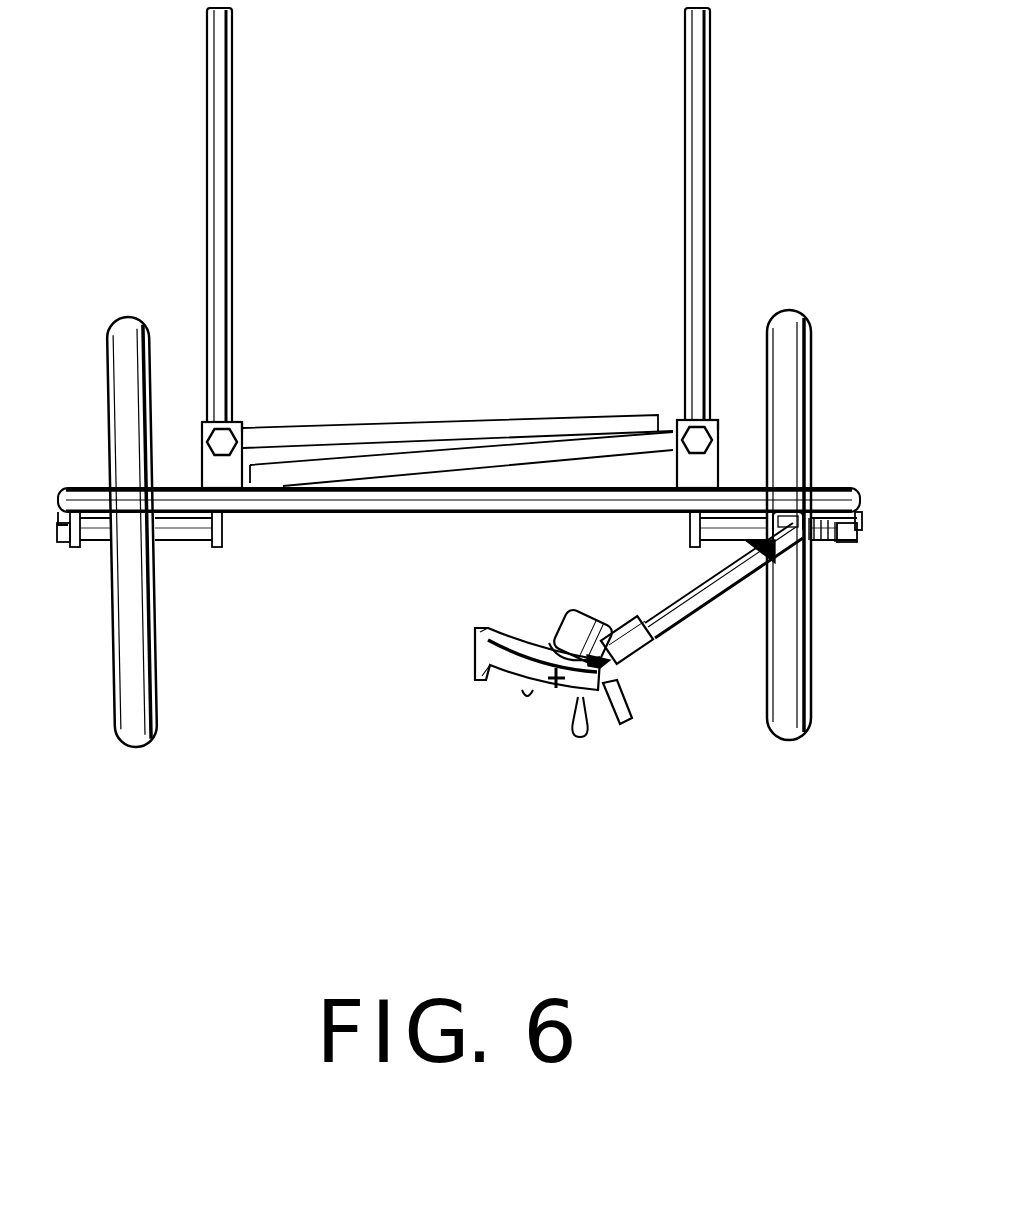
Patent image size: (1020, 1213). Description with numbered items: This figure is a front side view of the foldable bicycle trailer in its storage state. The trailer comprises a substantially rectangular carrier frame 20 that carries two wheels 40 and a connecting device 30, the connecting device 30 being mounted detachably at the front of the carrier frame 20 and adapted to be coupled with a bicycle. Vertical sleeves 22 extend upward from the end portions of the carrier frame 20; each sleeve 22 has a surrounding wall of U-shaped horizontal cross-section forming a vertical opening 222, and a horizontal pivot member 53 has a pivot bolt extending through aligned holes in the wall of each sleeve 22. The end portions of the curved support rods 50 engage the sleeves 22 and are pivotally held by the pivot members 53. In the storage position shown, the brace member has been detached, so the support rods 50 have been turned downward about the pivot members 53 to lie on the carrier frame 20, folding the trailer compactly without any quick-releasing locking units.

The carrier frame 20 is at (318, 531).
The vertical sleeve 22 is at (200, 463).
The connecting device 30 is at (678, 646).
The wheel 40 is at (177, 676).
The curved support rod 50 is at (252, 40).
The horizontal pivot member 53 is at (220, 438).
The vertical opening 222 is at (247, 420).